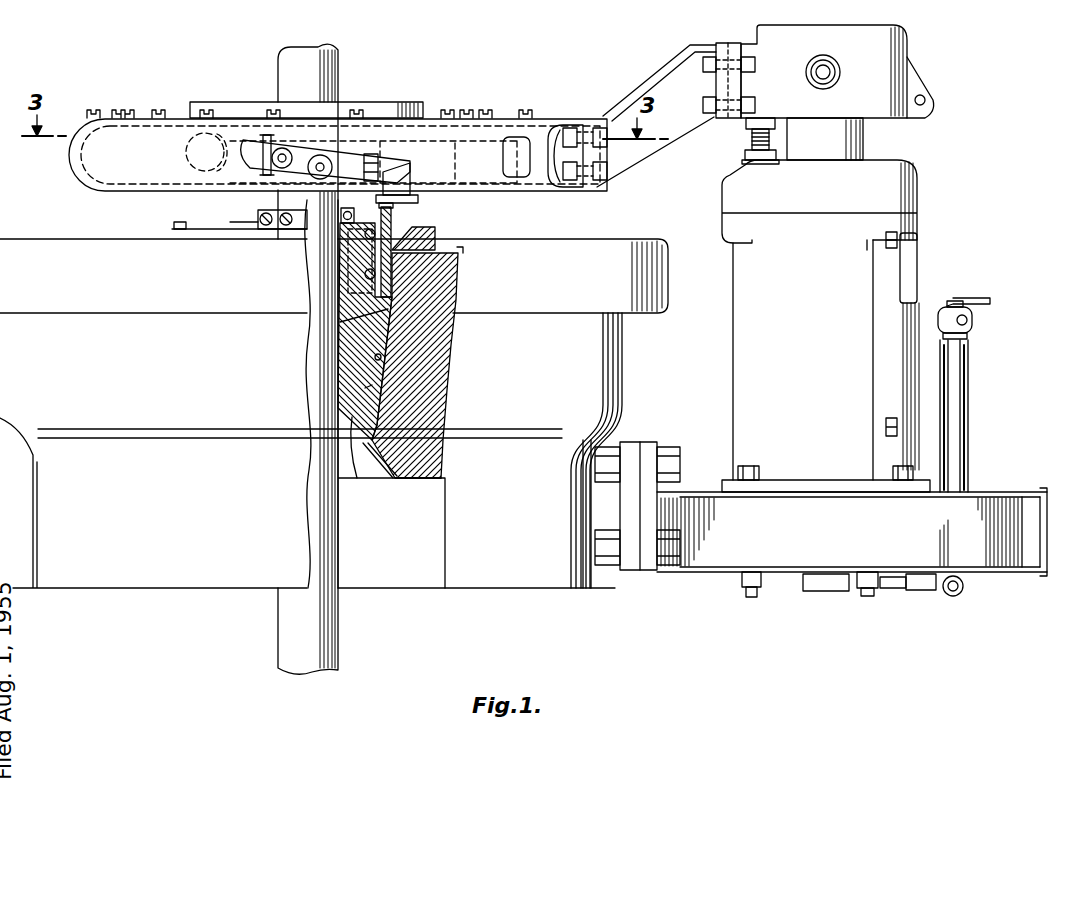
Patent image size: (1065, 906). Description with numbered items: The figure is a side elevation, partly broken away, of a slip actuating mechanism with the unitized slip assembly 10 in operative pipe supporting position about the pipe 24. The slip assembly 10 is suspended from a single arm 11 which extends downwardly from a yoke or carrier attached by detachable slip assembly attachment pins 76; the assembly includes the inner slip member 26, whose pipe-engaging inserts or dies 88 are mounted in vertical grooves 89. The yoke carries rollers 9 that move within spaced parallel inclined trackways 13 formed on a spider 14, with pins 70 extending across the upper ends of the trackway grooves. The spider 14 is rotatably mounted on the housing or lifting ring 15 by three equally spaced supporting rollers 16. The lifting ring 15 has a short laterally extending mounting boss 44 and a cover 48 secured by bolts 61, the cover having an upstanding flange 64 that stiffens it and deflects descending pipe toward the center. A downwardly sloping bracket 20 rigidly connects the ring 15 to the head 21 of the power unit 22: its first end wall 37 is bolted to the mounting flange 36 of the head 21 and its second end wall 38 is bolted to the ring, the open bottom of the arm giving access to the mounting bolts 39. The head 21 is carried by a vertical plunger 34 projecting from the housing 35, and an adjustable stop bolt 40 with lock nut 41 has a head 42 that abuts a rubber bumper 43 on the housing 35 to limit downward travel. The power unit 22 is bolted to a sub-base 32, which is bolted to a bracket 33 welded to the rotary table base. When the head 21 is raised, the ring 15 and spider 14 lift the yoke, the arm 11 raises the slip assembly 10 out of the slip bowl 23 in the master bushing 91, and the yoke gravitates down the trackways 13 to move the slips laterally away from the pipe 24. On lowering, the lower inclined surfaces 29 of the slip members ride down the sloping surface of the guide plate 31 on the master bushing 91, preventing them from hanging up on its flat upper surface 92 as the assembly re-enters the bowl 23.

The rollers 9 is at (290, 163).
The unitized slip assembly 10 is at (397, 342).
The arm 11 is at (398, 215).
The inclined trackways 13 is at (406, 197).
The spider 14 is at (467, 137).
The lifting ring 15 is at (96, 160).
The supporting rollers 16 is at (182, 147).
The bracket 20 is at (643, 85).
The head 21 is at (880, 50).
The power unit 22 is at (923, 182).
The slip bowl 23 is at (381, 358).
The pipe 24 is at (316, 628).
The inner slip member 26 is at (365, 388).
The lower inclined surfaces 29 is at (374, 461).
The guide plate 31 is at (432, 237).
The sub-base 32 is at (795, 555).
The bracket 33 is at (632, 560).
The vertical plunger 34 is at (862, 140).
The housing 35 is at (858, 227).
The mounting flange 36 is at (722, 44).
The first end wall 37 is at (708, 92).
The second end wall 38 is at (598, 157).
The mounting bolts 39 is at (562, 135).
The adjustable stop bolt 40 is at (750, 137).
The lock nut 41 is at (759, 118).
The head of stop bolt 42 is at (772, 156).
The rubber bumper 43 is at (758, 164).
The mounting boss 44 is at (553, 177).
The cover 48 is at (138, 117).
The bolts 61 is at (163, 110).
The upstanding flange 64 is at (384, 106).
The pins 70 is at (262, 152).
The slip assembly attachment pins 76 is at (367, 273).
The pipe-engaging inserts or dies 88 is at (340, 370).
The vertical grooves 89 is at (388, 309).
The master bushing 91 is at (423, 459).
The flat upper surface 92 is at (457, 252).